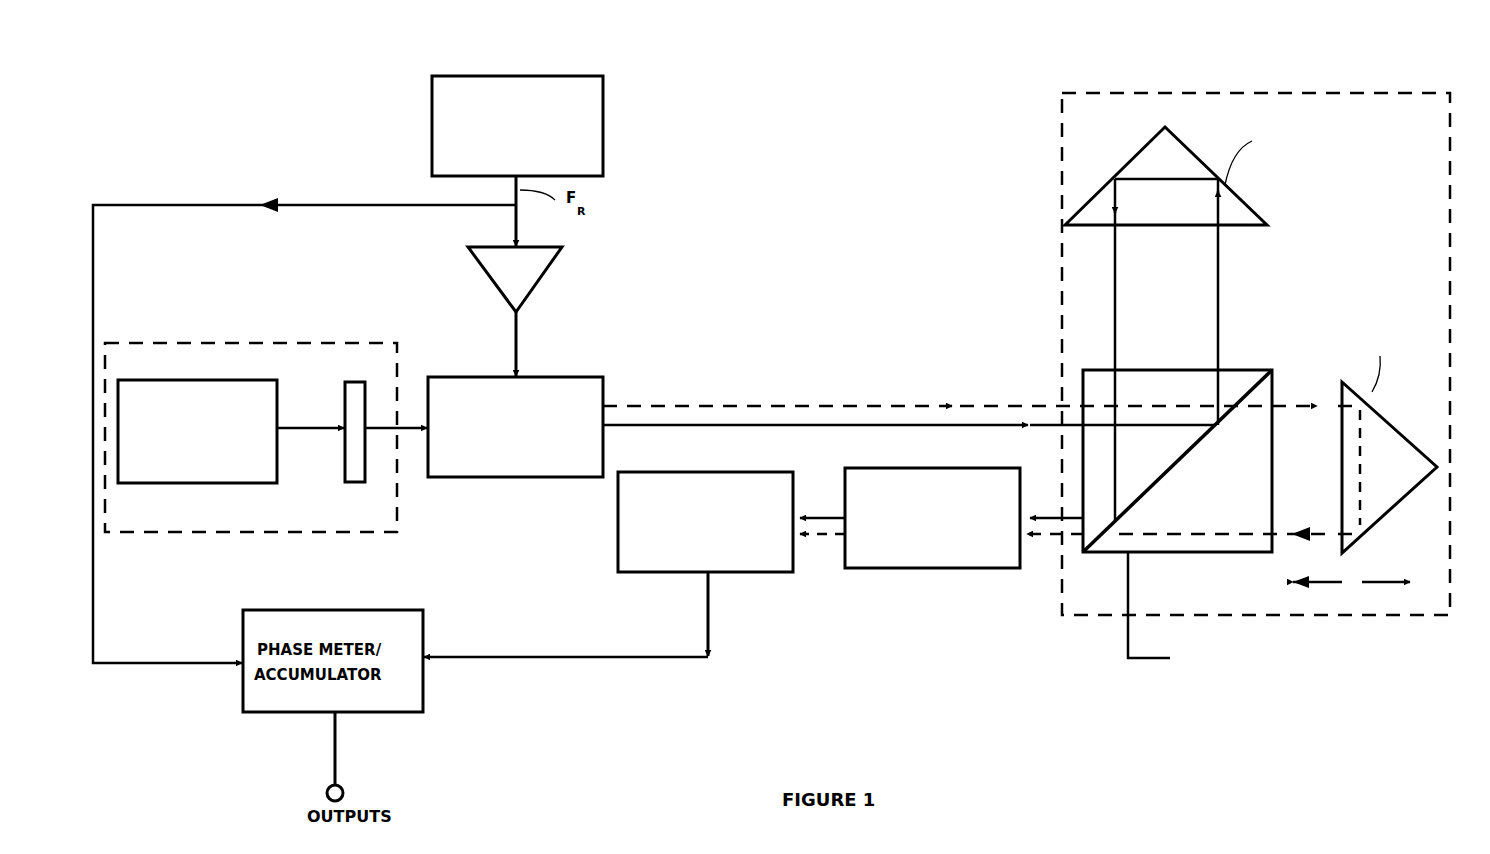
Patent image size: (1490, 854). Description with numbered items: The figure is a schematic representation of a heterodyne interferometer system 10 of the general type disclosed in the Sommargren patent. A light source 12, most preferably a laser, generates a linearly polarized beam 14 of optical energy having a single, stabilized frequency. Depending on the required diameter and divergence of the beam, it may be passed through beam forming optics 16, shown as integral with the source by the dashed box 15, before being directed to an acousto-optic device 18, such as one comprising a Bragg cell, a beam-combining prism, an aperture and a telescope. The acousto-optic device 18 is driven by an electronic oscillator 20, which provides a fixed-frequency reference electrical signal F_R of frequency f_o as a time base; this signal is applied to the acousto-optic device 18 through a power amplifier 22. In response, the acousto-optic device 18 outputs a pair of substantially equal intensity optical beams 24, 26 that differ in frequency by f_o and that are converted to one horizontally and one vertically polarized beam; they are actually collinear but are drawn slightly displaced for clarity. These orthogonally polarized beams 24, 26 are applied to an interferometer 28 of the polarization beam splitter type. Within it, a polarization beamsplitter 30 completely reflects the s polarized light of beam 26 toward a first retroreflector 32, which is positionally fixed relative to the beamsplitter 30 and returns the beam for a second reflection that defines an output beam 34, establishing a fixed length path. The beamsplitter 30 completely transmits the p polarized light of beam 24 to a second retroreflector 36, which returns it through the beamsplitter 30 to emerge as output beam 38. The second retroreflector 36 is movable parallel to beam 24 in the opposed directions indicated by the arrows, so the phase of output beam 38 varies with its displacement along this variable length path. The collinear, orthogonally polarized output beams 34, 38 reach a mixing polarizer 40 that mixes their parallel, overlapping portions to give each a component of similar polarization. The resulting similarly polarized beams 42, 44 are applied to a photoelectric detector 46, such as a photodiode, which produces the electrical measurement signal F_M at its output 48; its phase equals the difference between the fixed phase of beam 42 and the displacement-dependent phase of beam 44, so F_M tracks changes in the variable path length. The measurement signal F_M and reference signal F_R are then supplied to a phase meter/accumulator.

The heterodyne interferometer system 10 is at (912, 74).
The light source 12 is at (255, 380).
The linearly polarized beam 14 is at (305, 426).
The dashed box 15 is at (178, 343).
The beam forming optics 16 is at (352, 470).
The acousto-optic device 18 is at (515, 478).
The oscillator 20 is at (603, 101).
The power amplifier 22 is at (555, 265).
The optical beam 24 is at (730, 405).
The optical beam 26 is at (880, 423).
The interferometer 28 is at (1452, 103).
The polarization beamsplitter 30 is at (1222, 555).
The first retroreflector 32 is at (1127, 162).
The output beam 34 is at (1093, 512).
The second retroreflector 36 is at (1385, 415).
The output beam 38 is at (1058, 540).
The mixing polarizer 40 is at (935, 570).
The similarly polarized beam 42 is at (822, 516).
The similarly polarized beam 44 is at (833, 540).
The photoelectric detector 46 is at (668, 572).
The output 48 is at (712, 593).